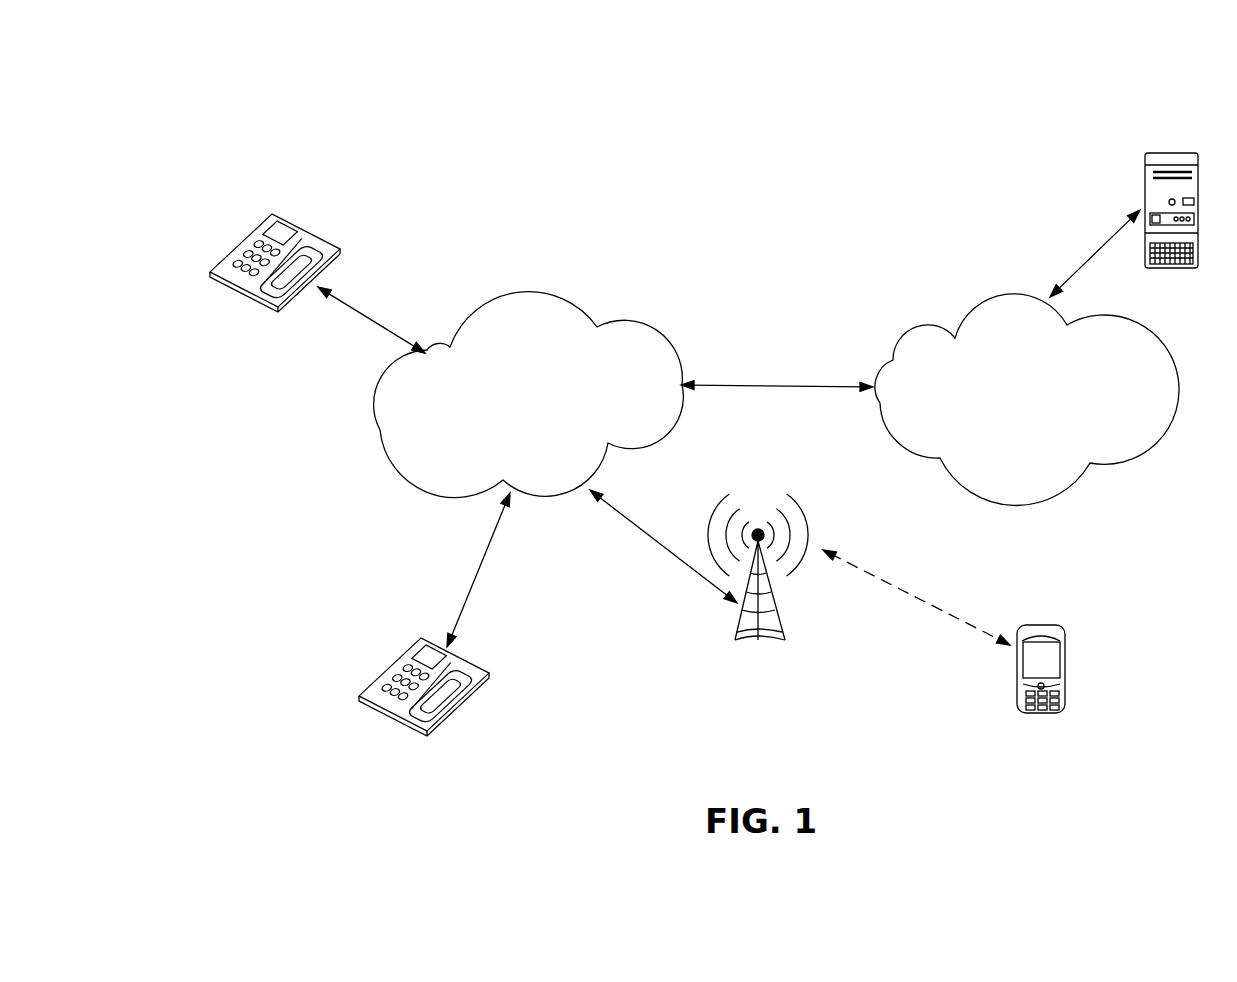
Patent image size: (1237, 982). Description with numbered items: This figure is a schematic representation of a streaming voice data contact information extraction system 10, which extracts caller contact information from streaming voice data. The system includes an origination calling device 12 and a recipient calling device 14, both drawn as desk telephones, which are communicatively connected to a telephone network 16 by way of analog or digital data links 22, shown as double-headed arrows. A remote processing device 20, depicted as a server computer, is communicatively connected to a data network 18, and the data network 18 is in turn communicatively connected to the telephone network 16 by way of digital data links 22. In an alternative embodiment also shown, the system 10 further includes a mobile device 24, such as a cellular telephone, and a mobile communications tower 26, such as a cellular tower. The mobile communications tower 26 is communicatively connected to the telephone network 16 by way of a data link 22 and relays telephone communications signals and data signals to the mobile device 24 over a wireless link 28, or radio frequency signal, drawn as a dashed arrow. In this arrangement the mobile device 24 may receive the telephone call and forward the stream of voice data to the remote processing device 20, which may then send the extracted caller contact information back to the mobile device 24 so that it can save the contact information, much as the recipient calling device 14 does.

The streaming voice data contact information extraction system 10 is at (756, 59).
The origination calling device 12 is at (235, 238).
The recipient calling device 14 is at (385, 667).
The telephone network 16 is at (496, 292).
The data network 18 is at (1053, 497).
The remote processing device 20 is at (1170, 153).
The data links 22 is at (362, 318).
The mobile device 24 is at (1065, 673).
The mobile communications tower 26 is at (757, 495).
The wireless link 28 is at (913, 597).